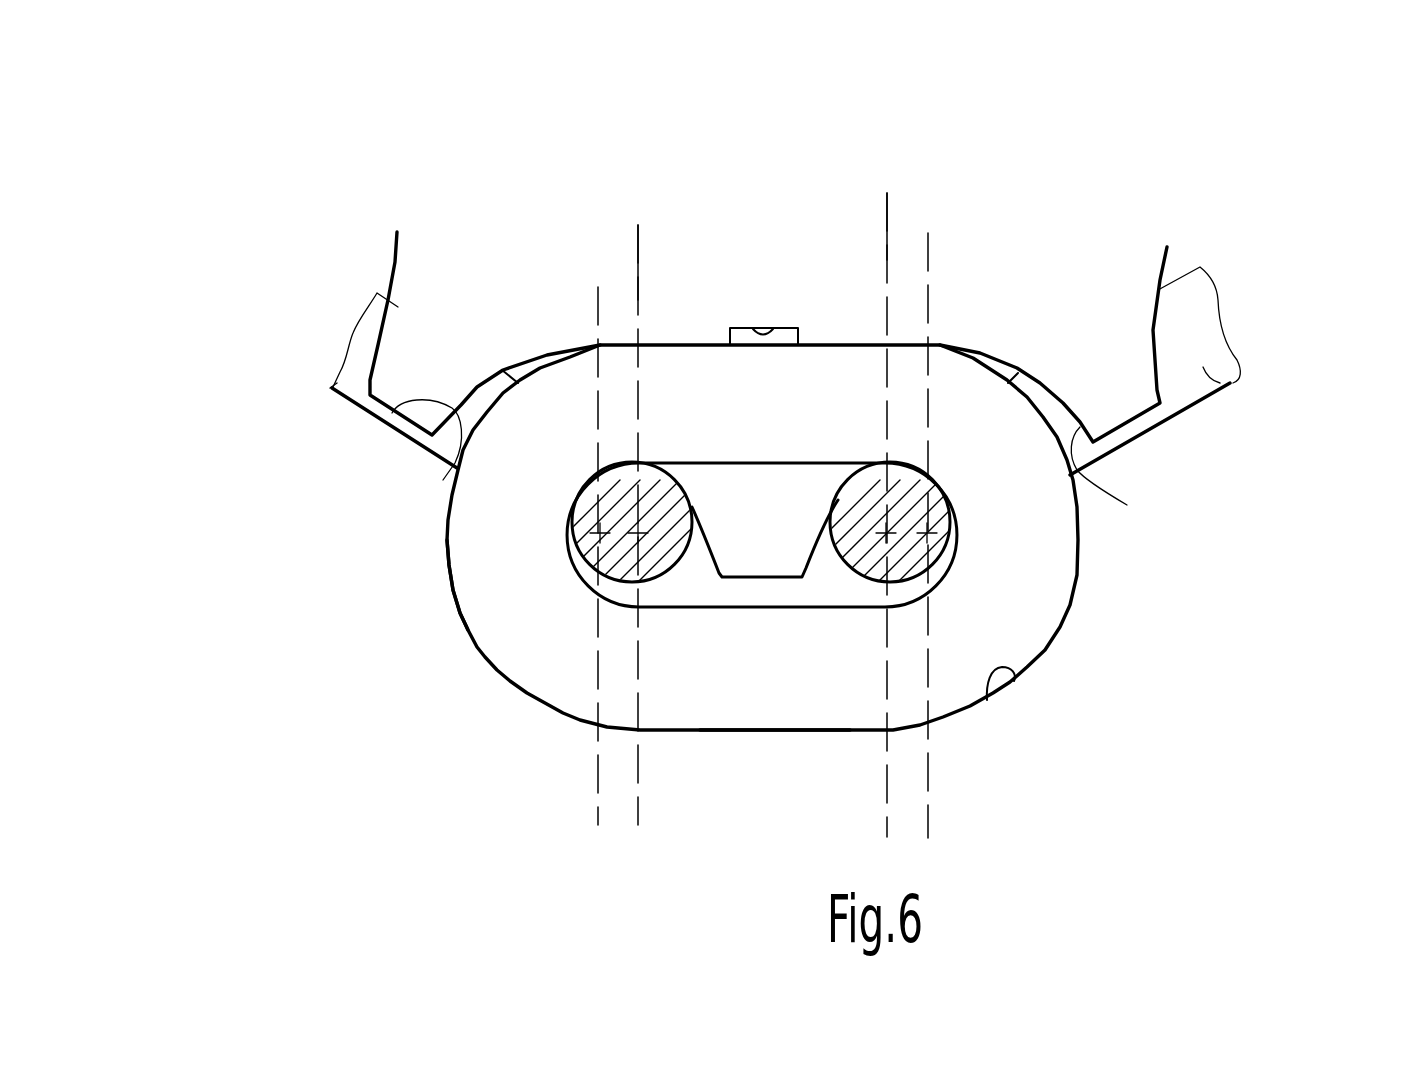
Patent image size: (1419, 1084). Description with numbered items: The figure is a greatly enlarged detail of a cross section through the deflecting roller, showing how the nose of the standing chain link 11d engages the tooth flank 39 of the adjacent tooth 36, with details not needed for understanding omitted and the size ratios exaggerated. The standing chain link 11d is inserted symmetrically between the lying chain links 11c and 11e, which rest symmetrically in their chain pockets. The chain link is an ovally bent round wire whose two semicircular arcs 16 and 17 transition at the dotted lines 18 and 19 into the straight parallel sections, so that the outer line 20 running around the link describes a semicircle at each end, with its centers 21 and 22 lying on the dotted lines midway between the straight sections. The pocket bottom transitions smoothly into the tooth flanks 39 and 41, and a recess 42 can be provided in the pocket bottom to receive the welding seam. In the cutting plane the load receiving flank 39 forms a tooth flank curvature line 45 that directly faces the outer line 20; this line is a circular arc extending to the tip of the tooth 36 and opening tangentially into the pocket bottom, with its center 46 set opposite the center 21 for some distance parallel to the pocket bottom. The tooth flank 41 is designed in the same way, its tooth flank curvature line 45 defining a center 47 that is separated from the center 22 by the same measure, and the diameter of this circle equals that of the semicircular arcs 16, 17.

The lying chain link 11c is at (1230, 383).
The standing chain link 11d is at (778, 733).
The lying chain link 11e is at (348, 394).
The semicircular arc 16 is at (1073, 610).
The semicircular arc 17 is at (497, 668).
The dotted line 18 is at (890, 222).
The dotted line 19 is at (640, 247).
The outer line 20 is at (985, 703).
The center 21 is at (641, 530).
The center 22 is at (885, 520).
The tooth 36 is at (413, 440).
The tooth flank 39 is at (393, 403).
The tooth flank 41 is at (1047, 373).
The recess 42 is at (777, 330).
The tooth flank curvature line 45 is at (443, 480).
The center 46 is at (582, 520).
The center 47 is at (957, 507).